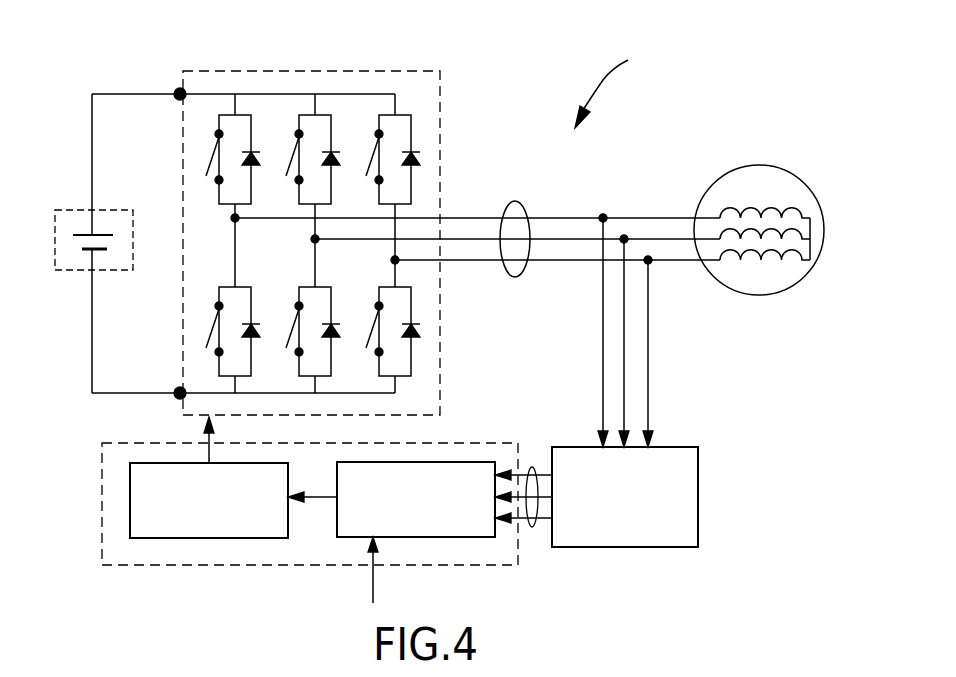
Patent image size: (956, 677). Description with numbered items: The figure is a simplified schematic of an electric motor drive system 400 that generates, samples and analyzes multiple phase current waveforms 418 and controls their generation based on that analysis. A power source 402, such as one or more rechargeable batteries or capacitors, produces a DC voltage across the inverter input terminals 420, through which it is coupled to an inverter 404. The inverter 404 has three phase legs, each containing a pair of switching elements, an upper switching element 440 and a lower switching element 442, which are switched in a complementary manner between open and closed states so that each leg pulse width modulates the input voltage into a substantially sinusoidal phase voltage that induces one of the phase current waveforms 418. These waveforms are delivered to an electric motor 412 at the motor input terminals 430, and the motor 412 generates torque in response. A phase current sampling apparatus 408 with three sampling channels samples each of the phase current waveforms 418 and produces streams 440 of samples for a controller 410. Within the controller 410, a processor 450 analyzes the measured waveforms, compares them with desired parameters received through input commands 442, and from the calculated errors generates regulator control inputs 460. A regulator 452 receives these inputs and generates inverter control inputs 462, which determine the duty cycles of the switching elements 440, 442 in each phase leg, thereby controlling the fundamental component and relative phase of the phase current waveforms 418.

The electric motor drive system 400 is at (614, 83).
The power source 402 is at (73, 270).
The inverter 404 is at (372, 307).
The phase current sampling apparatus 408 is at (698, 478).
The controller 410 is at (207, 565).
The electric motor 412 is at (803, 180).
The phase current waveforms 418 is at (528, 208).
The inverter input terminals 420 is at (176, 90).
The motor input terminals 430 is at (648, 260).
The upper switching element 440 is at (219, 183).
The lower switching element 442 is at (219, 306).
The processor 450 is at (477, 537).
The regulator 452 is at (250, 538).
The regulator control inputs 460 is at (322, 499).
The inverter control inputs 462 is at (210, 455).